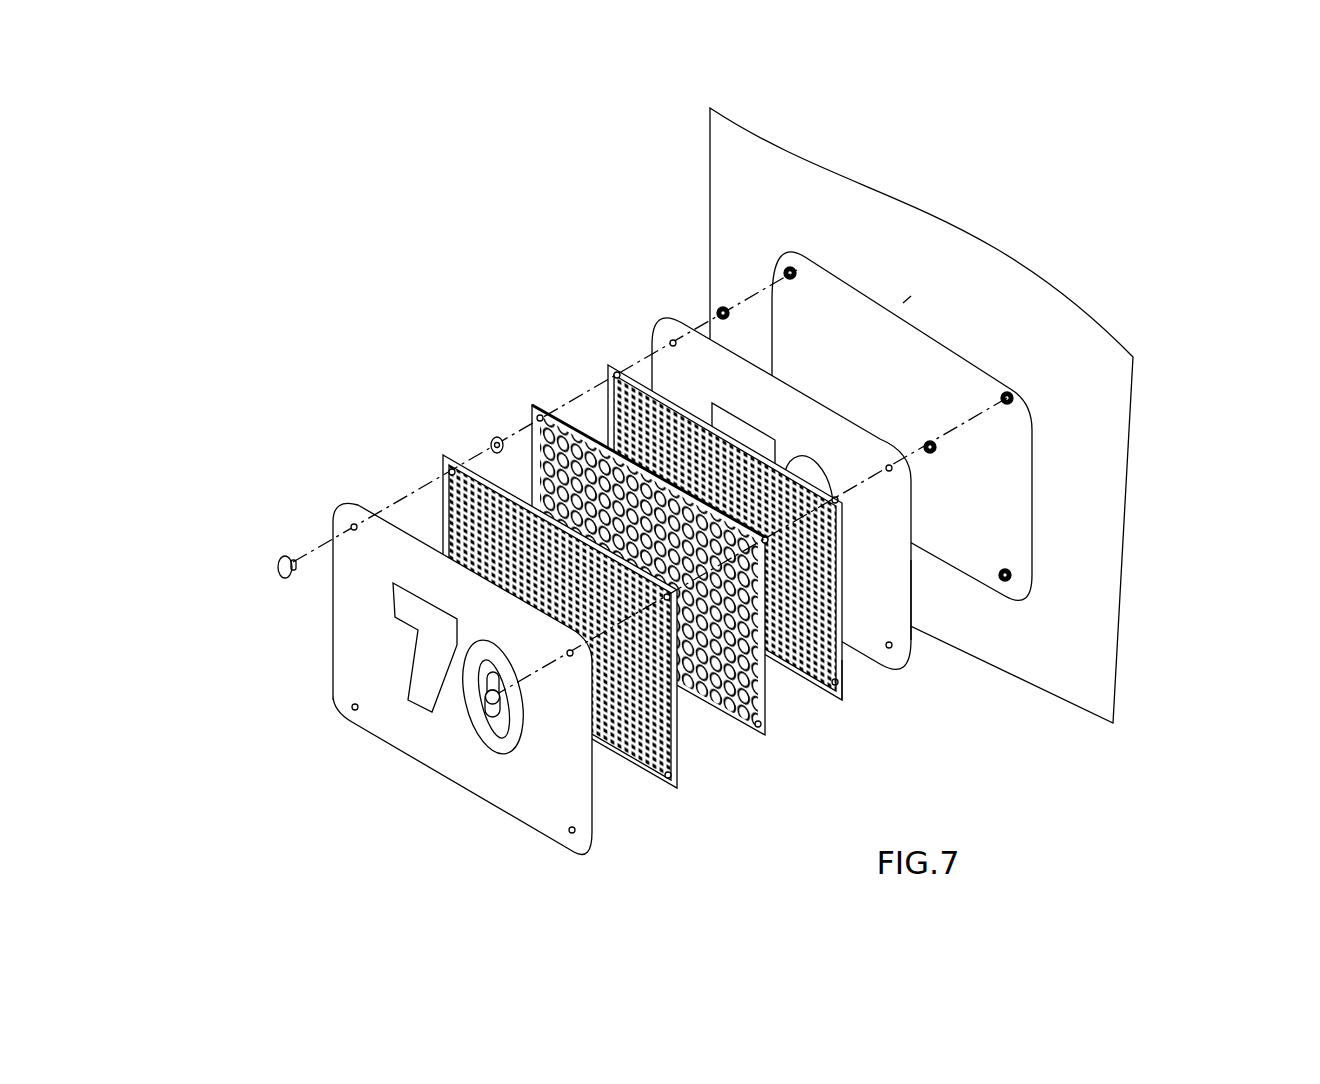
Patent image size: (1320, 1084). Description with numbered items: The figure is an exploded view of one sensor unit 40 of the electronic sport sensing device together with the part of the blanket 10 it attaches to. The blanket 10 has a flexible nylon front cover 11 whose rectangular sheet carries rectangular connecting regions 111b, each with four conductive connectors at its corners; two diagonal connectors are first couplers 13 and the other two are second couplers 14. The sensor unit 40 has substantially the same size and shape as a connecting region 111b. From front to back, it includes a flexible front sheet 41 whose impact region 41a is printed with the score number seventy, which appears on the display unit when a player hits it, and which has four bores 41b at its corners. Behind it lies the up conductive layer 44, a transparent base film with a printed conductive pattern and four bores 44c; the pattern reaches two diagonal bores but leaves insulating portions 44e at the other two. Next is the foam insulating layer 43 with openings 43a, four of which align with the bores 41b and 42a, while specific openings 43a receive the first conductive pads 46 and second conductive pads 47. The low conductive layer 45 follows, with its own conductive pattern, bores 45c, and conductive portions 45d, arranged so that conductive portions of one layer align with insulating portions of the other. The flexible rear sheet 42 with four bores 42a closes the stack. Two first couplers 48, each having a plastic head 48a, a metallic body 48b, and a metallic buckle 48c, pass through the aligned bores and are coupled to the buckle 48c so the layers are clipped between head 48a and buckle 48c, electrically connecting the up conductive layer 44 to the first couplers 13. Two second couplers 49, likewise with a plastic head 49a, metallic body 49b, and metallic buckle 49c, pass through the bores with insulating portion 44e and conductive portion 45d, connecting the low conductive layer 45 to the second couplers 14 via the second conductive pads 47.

The blanket 10 is at (933, 213).
The front cover 11 is at (1047, 307).
The connecting region 111b is at (907, 300).
The first coupler 13 is at (1033, 400).
The second coupler 14 is at (790, 267).
The sensor unit 40 is at (272, 740).
The front sheet 41 is at (332, 683).
The impact region 41a is at (428, 745).
The bore 41b is at (352, 525).
The rear sheet 42 is at (652, 335).
The bore 42a is at (672, 340).
The insulating layer 43 is at (541, 405).
The opening 43a is at (538, 416).
The up conductive layer 44 is at (678, 735).
The bore 44c is at (450, 470).
The insulating portion 44e is at (668, 778).
The low conductive layer 45 is at (830, 556).
The bore 45c is at (616, 372).
The conductive portion 45d is at (843, 697).
The first conductive pad 46 is at (912, 630).
The second conductive pad 47 is at (494, 440).
The first coupler 48 is at (420, 840).
The plastic head 48a is at (485, 712).
The metallic body 48b is at (503, 712).
The metallic buckle 48c is at (936, 450).
The second coupler 49 is at (222, 453).
The plastic head 49a is at (278, 568).
The metallic body 49b is at (292, 562).
The metallic buckle 49c is at (723, 307).